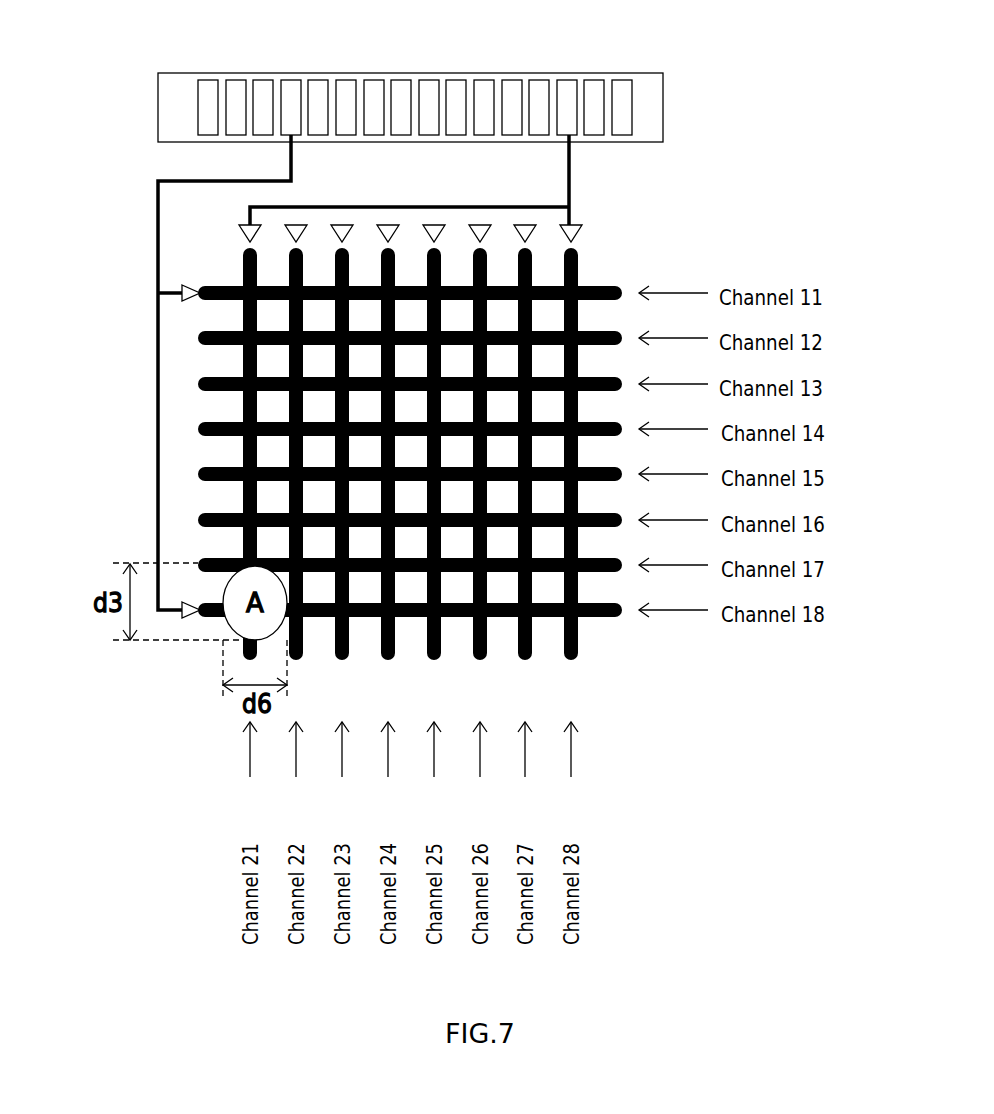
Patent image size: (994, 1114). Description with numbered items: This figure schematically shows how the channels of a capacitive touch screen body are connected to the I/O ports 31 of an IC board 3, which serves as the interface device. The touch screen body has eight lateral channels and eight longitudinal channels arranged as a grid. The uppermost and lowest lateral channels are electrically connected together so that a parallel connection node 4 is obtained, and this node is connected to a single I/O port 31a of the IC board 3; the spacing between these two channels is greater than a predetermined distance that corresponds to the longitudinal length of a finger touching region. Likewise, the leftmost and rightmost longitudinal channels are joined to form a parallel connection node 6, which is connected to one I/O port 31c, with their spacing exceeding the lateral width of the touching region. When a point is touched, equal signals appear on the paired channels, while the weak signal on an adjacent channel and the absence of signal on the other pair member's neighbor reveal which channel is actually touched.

The IC board 3 is at (682, 112).
The I/O ports 31 is at (193, 112).
The I/O port 31a is at (292, 80).
The I/O port 31c is at (567, 80).
The parallel connection node 4 is at (286, 143).
The parallel connection node 6 is at (577, 140).